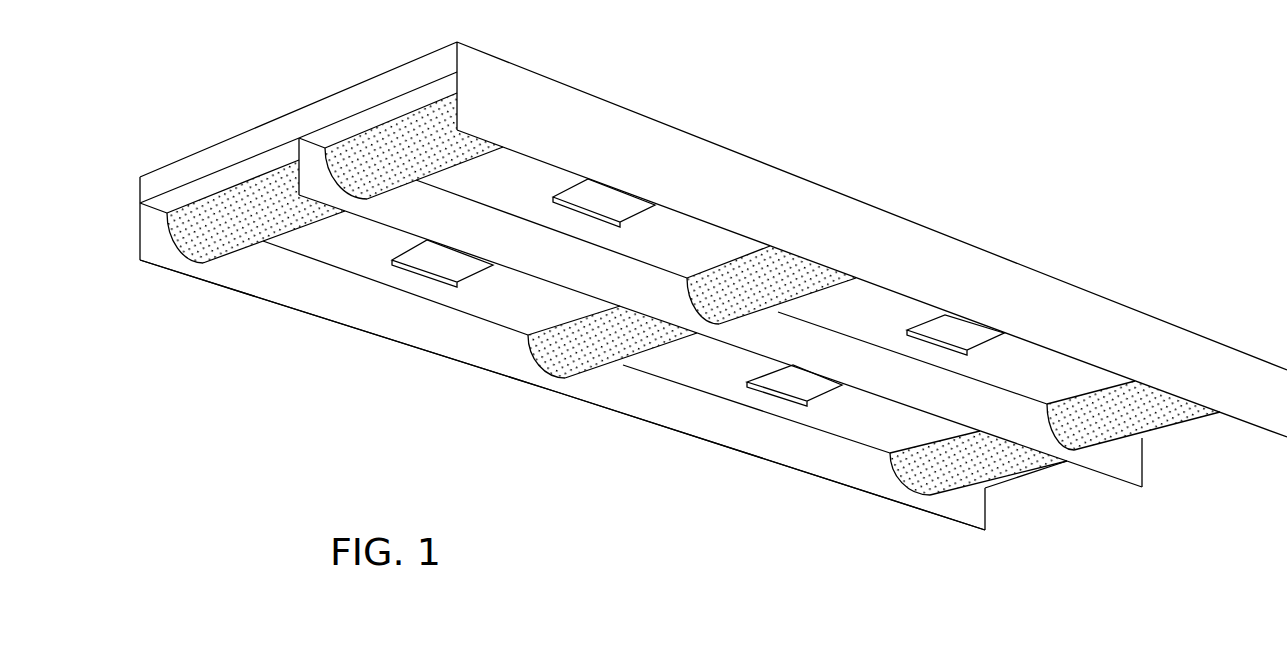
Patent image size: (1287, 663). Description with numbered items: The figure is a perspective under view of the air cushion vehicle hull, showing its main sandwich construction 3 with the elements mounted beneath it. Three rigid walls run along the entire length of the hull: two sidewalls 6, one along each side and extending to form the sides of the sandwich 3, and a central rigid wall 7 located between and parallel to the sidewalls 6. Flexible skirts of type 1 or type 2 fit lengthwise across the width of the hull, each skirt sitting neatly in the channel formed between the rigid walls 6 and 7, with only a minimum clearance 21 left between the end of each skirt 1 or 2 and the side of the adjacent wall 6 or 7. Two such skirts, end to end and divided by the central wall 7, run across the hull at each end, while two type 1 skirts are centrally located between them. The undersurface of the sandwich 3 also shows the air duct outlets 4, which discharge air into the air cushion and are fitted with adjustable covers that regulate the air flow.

The flexible skirt type 1 is at (511, 235).
The flexible skirt type 2 is at (1055, 438).
The sandwich construction 3 is at (713, 279).
The air duct outlets 4 is at (698, 292).
The rigid sidewalls 6 is at (562, 395).
The central rigid wall 7 is at (912, 358).
The minimum clearance 21 is at (1053, 430).